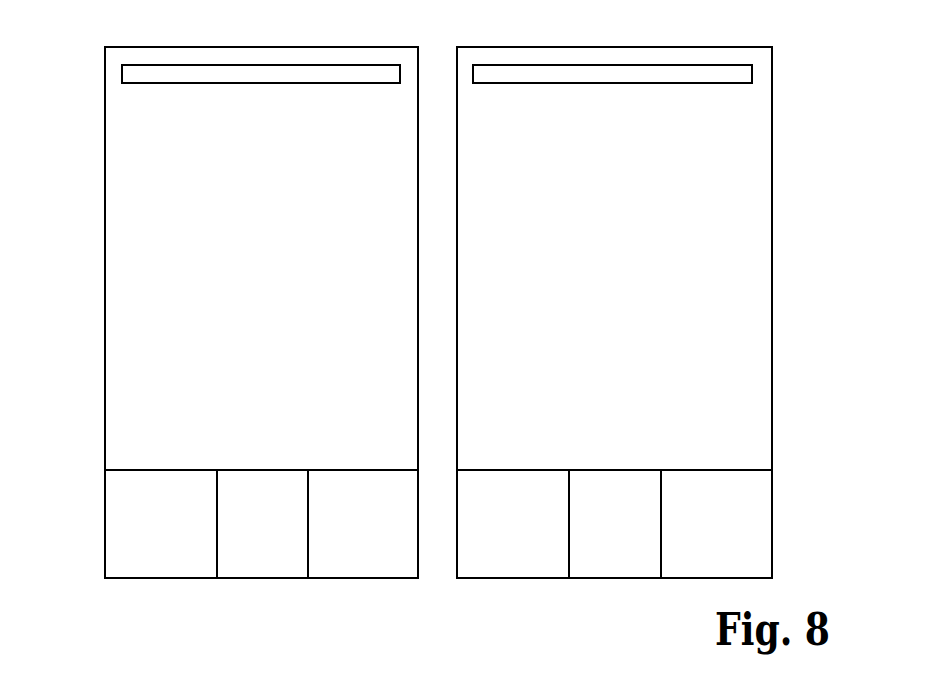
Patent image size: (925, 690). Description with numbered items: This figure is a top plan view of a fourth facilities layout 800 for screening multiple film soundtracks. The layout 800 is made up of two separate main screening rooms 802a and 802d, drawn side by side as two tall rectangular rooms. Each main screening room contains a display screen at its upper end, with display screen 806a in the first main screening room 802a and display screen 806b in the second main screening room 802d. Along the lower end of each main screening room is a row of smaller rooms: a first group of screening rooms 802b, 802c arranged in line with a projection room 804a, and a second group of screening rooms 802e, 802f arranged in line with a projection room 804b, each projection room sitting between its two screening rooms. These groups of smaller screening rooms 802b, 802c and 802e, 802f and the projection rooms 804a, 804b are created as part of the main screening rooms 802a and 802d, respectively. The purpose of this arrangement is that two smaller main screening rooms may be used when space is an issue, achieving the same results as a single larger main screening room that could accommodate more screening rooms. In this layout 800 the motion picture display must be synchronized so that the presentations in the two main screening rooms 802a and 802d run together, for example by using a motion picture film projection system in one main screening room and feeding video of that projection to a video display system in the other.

The fourth facilities layout 800 is at (416, 38).
The main screening room 802a is at (347, 444).
The screening room 802b is at (161, 524).
The screening room 802c is at (363, 524).
The main screening room 802d is at (698, 444).
The screening room 802e is at (513, 524).
The screening room 802f is at (716, 524).
The projection room 804a is at (262, 524).
The projection room 804b is at (615, 524).
The display screen 806a is at (122, 72).
The display screen 806b is at (752, 72).